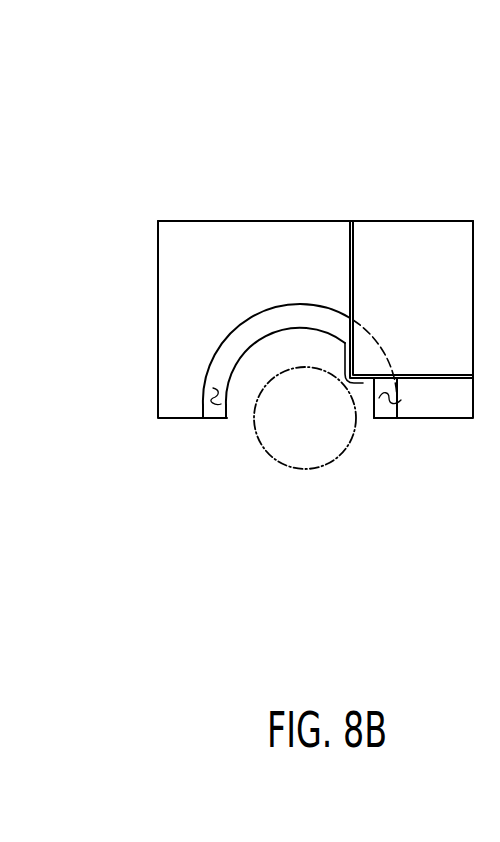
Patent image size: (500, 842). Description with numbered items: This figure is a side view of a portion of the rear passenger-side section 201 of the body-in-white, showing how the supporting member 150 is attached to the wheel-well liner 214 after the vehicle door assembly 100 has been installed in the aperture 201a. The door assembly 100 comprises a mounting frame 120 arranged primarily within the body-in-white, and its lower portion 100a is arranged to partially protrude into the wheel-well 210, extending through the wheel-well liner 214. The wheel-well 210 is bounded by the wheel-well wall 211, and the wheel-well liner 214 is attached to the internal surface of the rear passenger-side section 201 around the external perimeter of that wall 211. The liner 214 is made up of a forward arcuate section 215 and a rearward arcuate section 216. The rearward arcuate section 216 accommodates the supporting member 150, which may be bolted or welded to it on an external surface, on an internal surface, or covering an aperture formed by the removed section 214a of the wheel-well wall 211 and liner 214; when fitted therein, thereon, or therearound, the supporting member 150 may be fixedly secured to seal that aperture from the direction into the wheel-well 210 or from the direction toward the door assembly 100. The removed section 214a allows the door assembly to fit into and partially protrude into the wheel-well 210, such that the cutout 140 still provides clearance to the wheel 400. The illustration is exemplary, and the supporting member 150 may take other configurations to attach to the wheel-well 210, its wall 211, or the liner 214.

The vehicle door assembly 100 is at (433, 147).
The lower portion 100a is at (315, 349).
The mounting frame 120 is at (352, 246).
The cutout 140 is at (350, 383).
The supporting member 150 is at (353, 338).
The rear passenger-side section 201 is at (193, 219).
The aperture 201a is at (350, 246).
The wheel-well 210 is at (233, 447).
The wheel-well wall 211 is at (227, 393).
The wheel-well liner 214 is at (215, 418).
The removed section 214a is at (373, 358).
The forward arcuate section 215 is at (212, 392).
The rearward arcuate section 216 is at (396, 386).
The wheel 400 is at (343, 460).